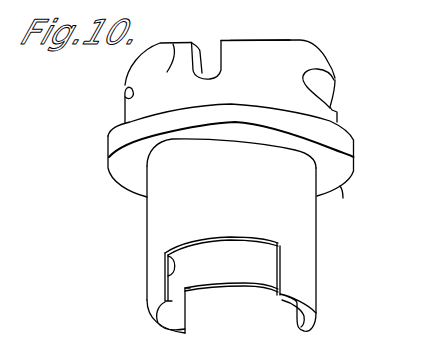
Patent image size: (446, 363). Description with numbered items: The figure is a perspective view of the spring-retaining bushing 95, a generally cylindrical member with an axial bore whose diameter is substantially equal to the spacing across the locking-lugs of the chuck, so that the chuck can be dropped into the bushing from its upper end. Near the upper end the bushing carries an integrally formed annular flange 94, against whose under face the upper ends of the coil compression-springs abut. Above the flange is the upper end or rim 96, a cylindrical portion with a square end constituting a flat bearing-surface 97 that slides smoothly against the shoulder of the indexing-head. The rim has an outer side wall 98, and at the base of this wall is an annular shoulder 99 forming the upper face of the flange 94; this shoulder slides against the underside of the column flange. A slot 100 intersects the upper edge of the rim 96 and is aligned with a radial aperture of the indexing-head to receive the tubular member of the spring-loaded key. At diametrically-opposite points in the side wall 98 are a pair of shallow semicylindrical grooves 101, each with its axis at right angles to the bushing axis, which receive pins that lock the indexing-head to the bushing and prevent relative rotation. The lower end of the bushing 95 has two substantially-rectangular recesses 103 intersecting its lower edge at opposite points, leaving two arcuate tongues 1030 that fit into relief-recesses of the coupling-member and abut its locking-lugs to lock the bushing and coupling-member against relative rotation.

The annular flange 94 is at (110, 148).
The spring-retaining bushing 95 is at (316, 227).
The rim 96 is at (302, 48).
The bearing-surface 97 is at (257, 41).
The outer side wall 98 is at (173, 44).
The annular shoulder 99 is at (117, 125).
The slot 100 is at (211, 53).
The shallow semicylindrical grooves 101 is at (127, 98).
The substantially-rectangular recesses 103 is at (165, 265).
The arcuate tongues 1030 is at (154, 296).